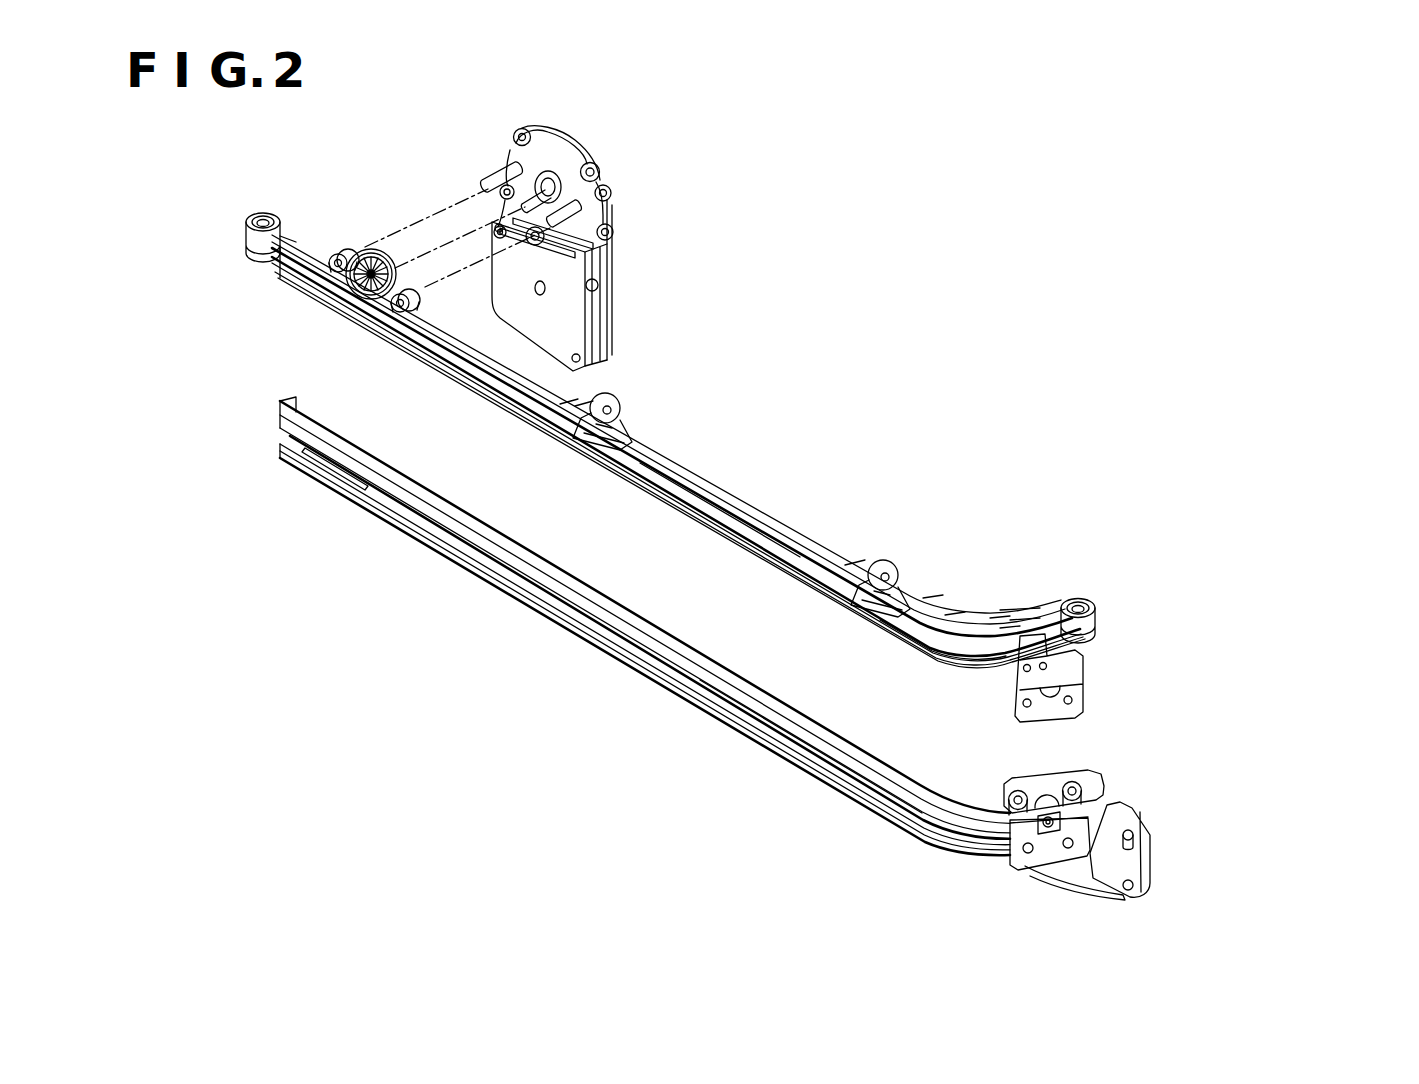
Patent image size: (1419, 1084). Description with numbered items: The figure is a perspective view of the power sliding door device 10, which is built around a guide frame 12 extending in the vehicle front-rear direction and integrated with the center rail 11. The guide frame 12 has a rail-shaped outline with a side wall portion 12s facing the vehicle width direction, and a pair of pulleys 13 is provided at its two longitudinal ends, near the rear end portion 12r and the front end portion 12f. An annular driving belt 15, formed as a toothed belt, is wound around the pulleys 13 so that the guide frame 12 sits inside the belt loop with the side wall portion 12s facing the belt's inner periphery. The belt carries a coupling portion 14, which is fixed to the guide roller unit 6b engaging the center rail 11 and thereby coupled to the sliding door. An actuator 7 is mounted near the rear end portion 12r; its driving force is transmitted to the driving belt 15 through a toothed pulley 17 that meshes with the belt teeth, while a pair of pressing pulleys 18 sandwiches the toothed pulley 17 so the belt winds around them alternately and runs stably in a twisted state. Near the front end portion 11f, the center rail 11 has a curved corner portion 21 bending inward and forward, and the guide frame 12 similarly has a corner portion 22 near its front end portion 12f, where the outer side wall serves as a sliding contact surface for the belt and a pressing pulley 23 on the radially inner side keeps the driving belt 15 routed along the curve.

The power sliding door device 10 is at (1355, 198).
The guide frame 12 is at (760, 473).
The rear end portion 12r is at (262, 209).
The front end portion 12f is at (1078, 598).
The side wall portion 12s is at (758, 538).
The pulley 13 is at (245, 240).
The coupling portion 14 is at (1085, 697).
The driving belt 15 is at (673, 494).
The toothed pulley 17 is at (388, 257).
The pressing pulley 18 is at (340, 249).
The actuator 7 is at (645, 213).
The corner portion 22 is at (936, 650).
The pressing pulley 23 is at (926, 600).
The center rail 11 is at (530, 680).
The front end portion 11f is at (1103, 778).
The corner portion 21 is at (926, 844).
The guide roller unit 6b is at (1070, 892).